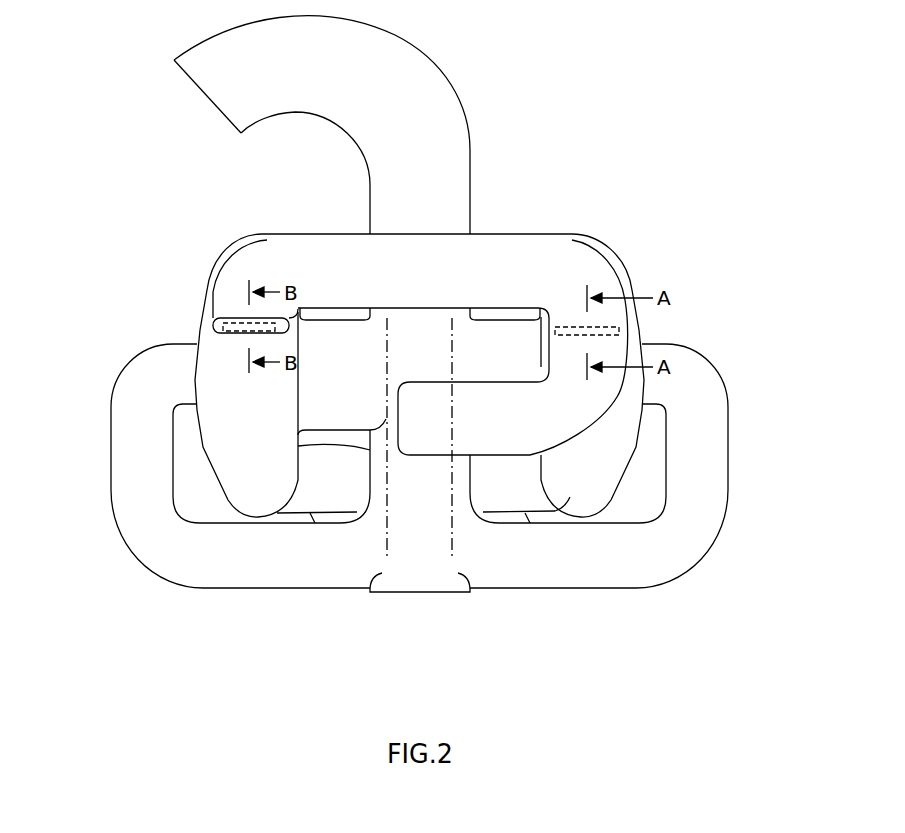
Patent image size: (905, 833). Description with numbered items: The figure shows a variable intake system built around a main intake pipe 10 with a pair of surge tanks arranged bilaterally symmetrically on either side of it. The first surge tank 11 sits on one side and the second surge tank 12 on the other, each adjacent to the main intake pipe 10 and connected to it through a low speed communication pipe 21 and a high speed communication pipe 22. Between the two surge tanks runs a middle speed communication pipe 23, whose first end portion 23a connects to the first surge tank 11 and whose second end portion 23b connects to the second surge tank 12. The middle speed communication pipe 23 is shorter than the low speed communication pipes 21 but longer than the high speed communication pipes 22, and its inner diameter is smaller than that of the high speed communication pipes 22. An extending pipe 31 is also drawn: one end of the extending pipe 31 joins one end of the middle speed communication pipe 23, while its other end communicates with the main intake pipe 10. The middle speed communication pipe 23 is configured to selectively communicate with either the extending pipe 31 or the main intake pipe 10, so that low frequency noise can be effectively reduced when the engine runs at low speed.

The main intake pipe 10 is at (460, 150).
The first surge tank 11 is at (622, 443).
The second surge tank 12 is at (217, 443).
The low speed communication pipe 21 is at (133, 548).
The high speed communication pipe 22 is at (352, 340).
The middle speed communication pipe 23 is at (525, 234).
The first end portion 23a is at (590, 327).
The second end portion 23b is at (247, 321).
The extending pipe 31 is at (570, 440).